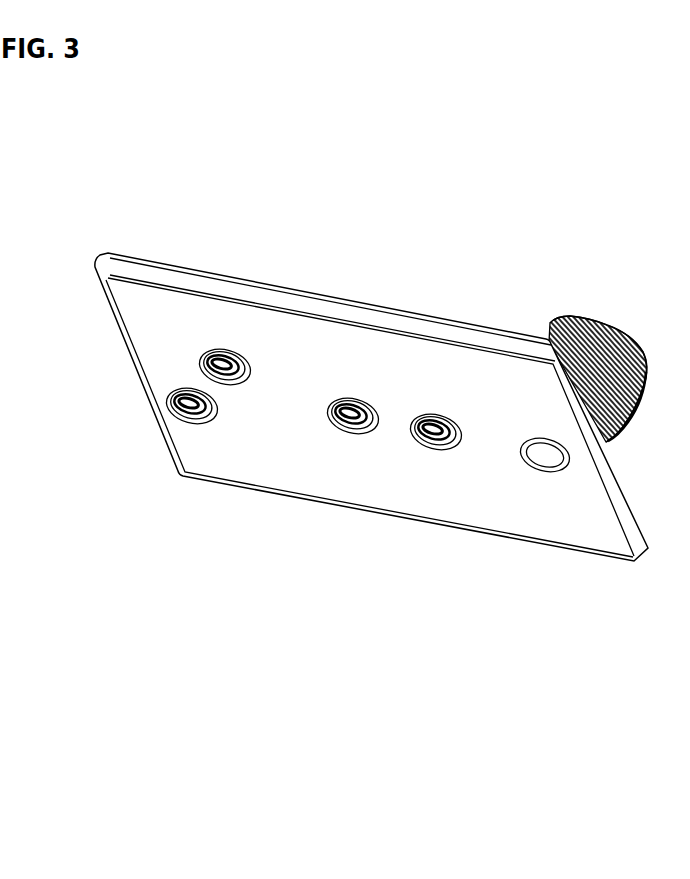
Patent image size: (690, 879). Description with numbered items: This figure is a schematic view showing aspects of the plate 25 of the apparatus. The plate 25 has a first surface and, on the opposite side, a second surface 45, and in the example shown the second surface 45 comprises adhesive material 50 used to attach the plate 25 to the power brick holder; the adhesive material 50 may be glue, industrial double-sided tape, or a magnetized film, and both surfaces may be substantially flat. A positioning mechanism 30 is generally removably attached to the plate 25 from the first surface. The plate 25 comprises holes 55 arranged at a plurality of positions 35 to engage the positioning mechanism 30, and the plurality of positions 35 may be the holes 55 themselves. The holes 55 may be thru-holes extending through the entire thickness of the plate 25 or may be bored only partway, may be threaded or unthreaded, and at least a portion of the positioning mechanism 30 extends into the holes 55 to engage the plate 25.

The plate 25 is at (354, 371).
The positioning mechanism 30 is at (606, 338).
The plurality of positions 35 is at (196, 356).
The second surface 45 is at (301, 448).
The adhesive material 50 is at (157, 337).
The holes 55 is at (222, 368).